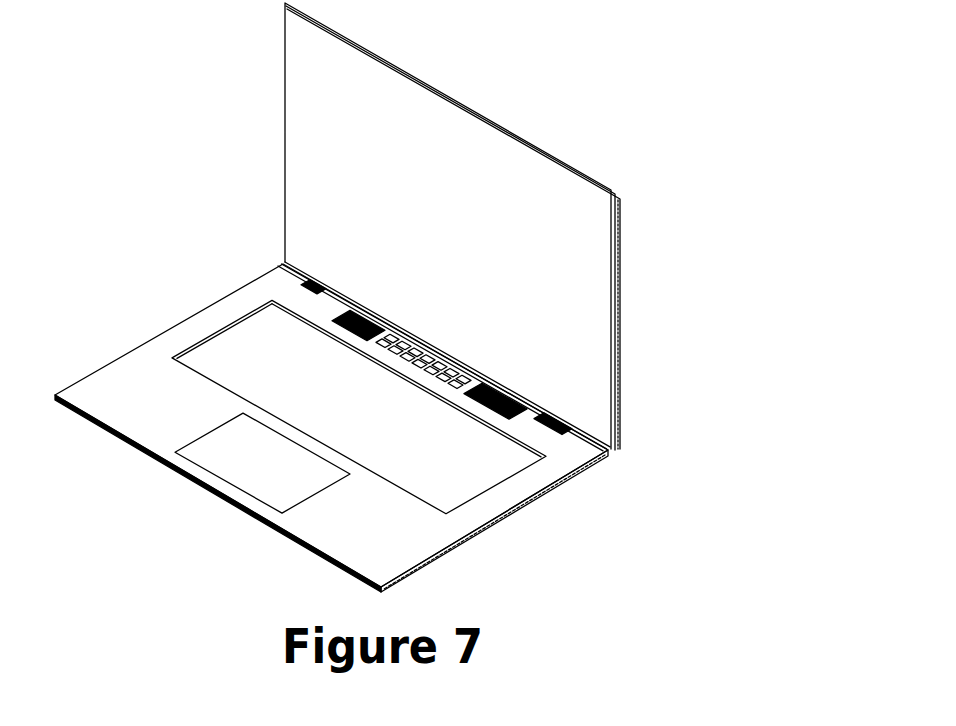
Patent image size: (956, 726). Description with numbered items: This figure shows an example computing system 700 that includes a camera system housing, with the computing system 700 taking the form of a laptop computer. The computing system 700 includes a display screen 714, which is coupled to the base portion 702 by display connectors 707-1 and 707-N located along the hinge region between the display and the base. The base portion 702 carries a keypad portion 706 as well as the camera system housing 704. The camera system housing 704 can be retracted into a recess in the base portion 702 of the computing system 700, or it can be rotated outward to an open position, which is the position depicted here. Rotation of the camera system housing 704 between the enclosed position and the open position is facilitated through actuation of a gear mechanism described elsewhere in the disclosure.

The computing system 700 is at (197, 51).
The base portion 702 is at (124, 401).
The camera system housing 704 is at (448, 374).
The keypad portion 706 is at (253, 364).
The display connector 707-1 is at (322, 294).
The display connector 707-N is at (553, 430).
The display screen 714 is at (350, 128).